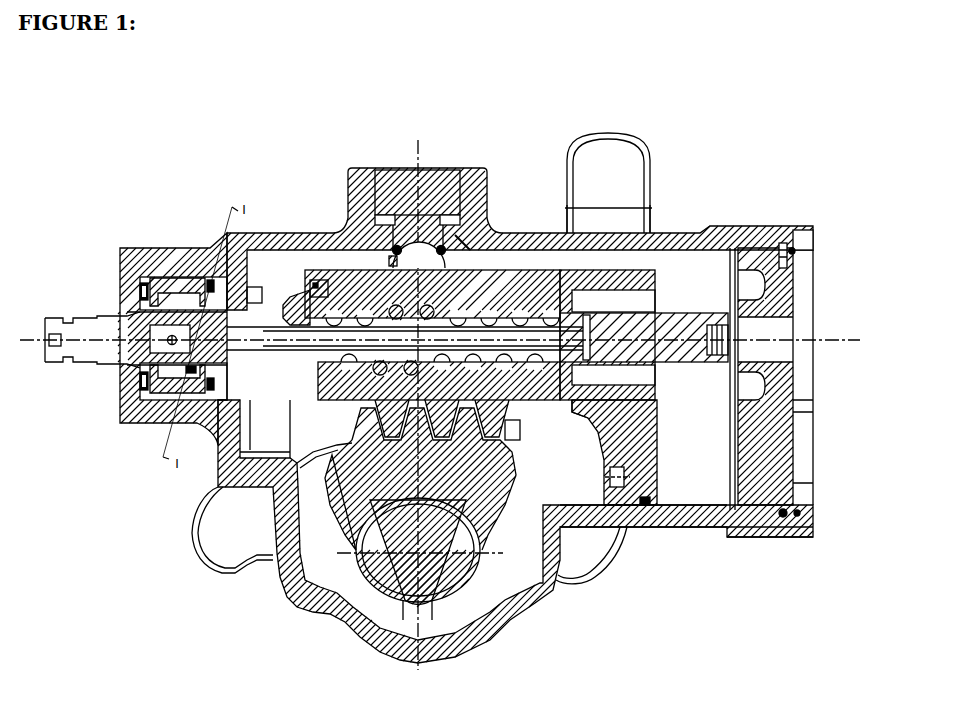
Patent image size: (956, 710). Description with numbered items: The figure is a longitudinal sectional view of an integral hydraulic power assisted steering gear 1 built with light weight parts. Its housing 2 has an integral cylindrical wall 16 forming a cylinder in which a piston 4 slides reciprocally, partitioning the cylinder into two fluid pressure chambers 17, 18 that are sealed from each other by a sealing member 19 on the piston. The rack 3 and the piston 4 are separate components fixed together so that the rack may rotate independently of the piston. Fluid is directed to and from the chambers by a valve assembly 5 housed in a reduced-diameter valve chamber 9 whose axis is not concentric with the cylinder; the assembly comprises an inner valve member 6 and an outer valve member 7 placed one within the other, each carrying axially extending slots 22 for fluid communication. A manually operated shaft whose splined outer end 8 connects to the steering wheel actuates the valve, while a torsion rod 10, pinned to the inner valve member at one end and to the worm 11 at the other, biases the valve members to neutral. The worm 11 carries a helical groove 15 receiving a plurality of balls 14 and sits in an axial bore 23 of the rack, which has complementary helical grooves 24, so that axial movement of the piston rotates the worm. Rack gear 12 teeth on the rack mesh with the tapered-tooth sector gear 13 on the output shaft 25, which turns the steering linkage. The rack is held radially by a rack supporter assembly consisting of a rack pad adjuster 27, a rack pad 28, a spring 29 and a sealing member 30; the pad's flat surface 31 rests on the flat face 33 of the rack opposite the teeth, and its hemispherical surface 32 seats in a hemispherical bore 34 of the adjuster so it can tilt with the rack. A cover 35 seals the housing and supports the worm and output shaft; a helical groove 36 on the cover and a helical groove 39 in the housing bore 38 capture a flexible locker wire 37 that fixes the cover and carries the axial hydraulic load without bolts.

The integral hydraulic power assisted steering gear 1 is at (680, 530).
The housing 2 is at (258, 232).
The rack 3 is at (528, 282).
The piston 4 is at (658, 452).
The valve assembly 5 is at (200, 396).
The inner valve member 6 is at (191, 375).
The outer valve member 7 is at (140, 277).
The outer end of shaft 8 is at (46, 358).
The valve chamber 9 is at (160, 395).
The torsion rod 10 is at (298, 345).
The worm 11 is at (688, 345).
The rack gear 12 is at (504, 436).
The sector gear 13 is at (498, 500).
The balls 14 is at (371, 370).
The helical groove 15 is at (526, 362).
The integral cylindrical wall 16 is at (688, 255).
The fluid pressure chamber 17 is at (585, 488).
The fluid pressure chamber 18 is at (690, 495).
The sealing member 19 is at (650, 501).
The axially extending slots 22 is at (178, 305).
The axial bore 23 is at (306, 290).
The helical grooves 24 is at (370, 305).
The output shaft 25 is at (420, 558).
The rack pad adjuster 27 is at (455, 170).
The rack pad 28 is at (394, 248).
The spring 29 is at (420, 167).
The sealing member 30 is at (465, 232).
The flat surface of rack pad 31 is at (389, 259).
The hemispherical surface of rack pad 32 is at (444, 256).
The flat face of rack 33 is at (330, 263).
The hemispherical bore 34 is at (412, 250).
The cover 35 is at (776, 376).
The helical groove 36 is at (794, 253).
The locker wire 37 is at (800, 512).
The bore 38 is at (782, 520).
The helical groove 39 is at (786, 242).